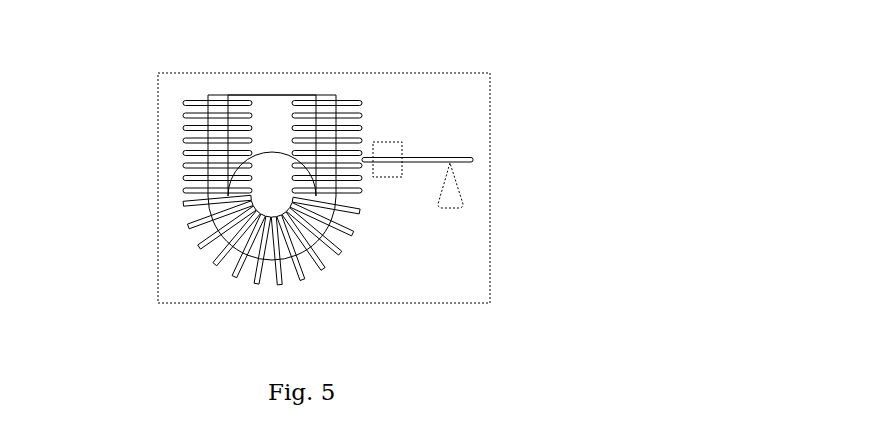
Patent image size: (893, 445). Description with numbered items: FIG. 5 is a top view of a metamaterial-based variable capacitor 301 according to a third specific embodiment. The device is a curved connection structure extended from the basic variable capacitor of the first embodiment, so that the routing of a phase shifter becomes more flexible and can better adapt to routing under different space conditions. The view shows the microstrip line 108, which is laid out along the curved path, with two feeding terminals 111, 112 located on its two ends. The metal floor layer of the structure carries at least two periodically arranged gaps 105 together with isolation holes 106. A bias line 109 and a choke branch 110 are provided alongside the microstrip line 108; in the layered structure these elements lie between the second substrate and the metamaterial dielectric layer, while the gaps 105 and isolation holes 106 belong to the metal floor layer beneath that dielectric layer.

The metamaterial-based variable capacitor 301 is at (113, 139).
The gaps 105 is at (177, 238).
The feeding terminal 112 is at (204, 84).
The feeding terminal 111 is at (344, 85).
The microstrip line 108 is at (305, 258).
The isolation holes 106 is at (416, 138).
The bias line 109 is at (426, 184).
The choke branch 110 is at (474, 223).